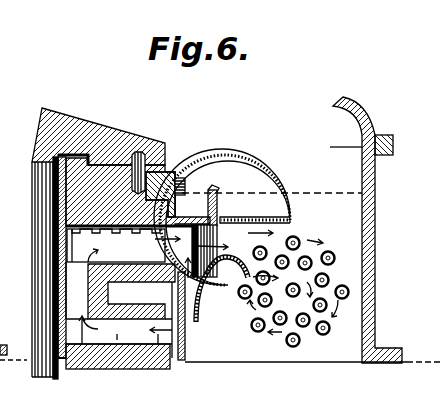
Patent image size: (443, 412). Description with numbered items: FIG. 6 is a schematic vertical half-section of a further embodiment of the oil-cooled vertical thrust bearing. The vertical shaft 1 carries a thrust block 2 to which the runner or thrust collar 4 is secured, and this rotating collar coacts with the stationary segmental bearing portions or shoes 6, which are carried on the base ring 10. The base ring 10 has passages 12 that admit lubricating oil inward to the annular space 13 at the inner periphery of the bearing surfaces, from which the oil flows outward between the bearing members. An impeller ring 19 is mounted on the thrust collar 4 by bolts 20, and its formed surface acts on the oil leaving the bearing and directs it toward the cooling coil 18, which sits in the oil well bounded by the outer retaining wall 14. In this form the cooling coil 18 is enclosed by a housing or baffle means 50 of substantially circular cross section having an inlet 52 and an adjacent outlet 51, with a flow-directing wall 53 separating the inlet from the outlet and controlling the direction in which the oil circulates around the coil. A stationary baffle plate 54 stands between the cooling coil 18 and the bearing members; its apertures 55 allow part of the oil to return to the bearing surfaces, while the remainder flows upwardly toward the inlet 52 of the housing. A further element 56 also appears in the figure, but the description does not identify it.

The vertical shaft 1 is at (47, 378).
The thrust block 2 is at (72, 124).
The runner or thrust collar 4 is at (107, 144).
The segmental bearing portions or shoes 6 is at (123, 245).
The base ring 10 is at (157, 358).
The passages 12 is at (105, 370).
The annular space 13 is at (80, 293).
The outer retaining wall 14 is at (377, 195).
The cooling coil 18 is at (328, 280).
The impeller ring 19 is at (178, 203).
The bolts 20 is at (180, 177).
The housing or baffle means 50 is at (281, 220).
The outlet 51 is at (203, 308).
The inlet 52 is at (281, 223).
The flow-directing wall 53 is at (200, 323).
The stationary baffle plate 54 is at (174, 362).
The apertures 55 is at (180, 293).
The gate 56 is at (216, 214).